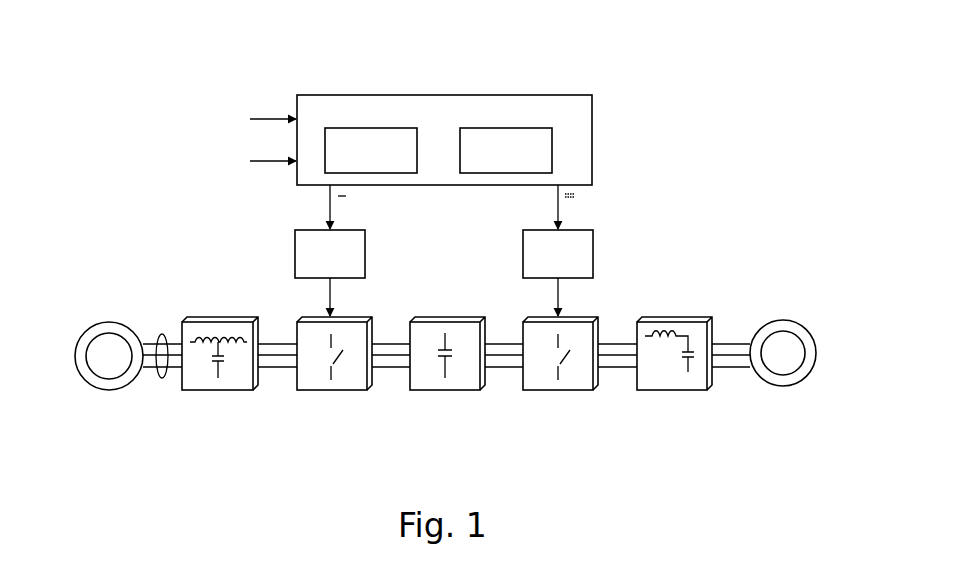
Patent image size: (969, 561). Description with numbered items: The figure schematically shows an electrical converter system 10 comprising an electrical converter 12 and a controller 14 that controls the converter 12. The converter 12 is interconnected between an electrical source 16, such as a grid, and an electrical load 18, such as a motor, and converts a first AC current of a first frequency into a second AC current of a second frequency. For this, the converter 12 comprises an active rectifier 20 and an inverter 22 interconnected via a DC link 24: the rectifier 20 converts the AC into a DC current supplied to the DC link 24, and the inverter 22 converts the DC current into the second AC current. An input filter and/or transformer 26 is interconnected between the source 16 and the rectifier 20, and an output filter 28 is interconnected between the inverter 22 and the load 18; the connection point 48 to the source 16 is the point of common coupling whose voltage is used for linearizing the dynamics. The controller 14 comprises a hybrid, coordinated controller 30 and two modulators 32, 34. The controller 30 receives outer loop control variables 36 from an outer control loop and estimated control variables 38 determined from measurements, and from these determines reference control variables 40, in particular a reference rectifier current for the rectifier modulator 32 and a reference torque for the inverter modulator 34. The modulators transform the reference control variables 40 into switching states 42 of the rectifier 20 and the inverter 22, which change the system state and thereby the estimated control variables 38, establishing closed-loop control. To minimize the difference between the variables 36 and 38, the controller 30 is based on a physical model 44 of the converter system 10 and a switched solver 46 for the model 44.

The electrical converter system 10 is at (685, 49).
The electrical converter 12 is at (740, 247).
The controller 14 is at (640, 167).
The electrical source 16 is at (112, 391).
The electrical load 18 is at (784, 388).
The active rectifier 20 is at (333, 391).
The inverter 22 is at (560, 391).
The DC link 24 is at (446, 391).
The input filter and/or transformer 26 is at (218, 391).
The output filter 28 is at (670, 391).
The hybrid, coordinated controller 30 is at (539, 94).
The rectifier modulator 32 is at (367, 256).
The inverter modulator 34 is at (595, 255).
The outer loop control variables 36 is at (269, 117).
The estimated control variables 38 is at (265, 163).
The reference control variables 40 is at (329, 212).
The switching states 42 is at (333, 298).
The physical model 44 is at (360, 128).
The switched solver 46 is at (555, 142).
The connection point 48 is at (161, 330).